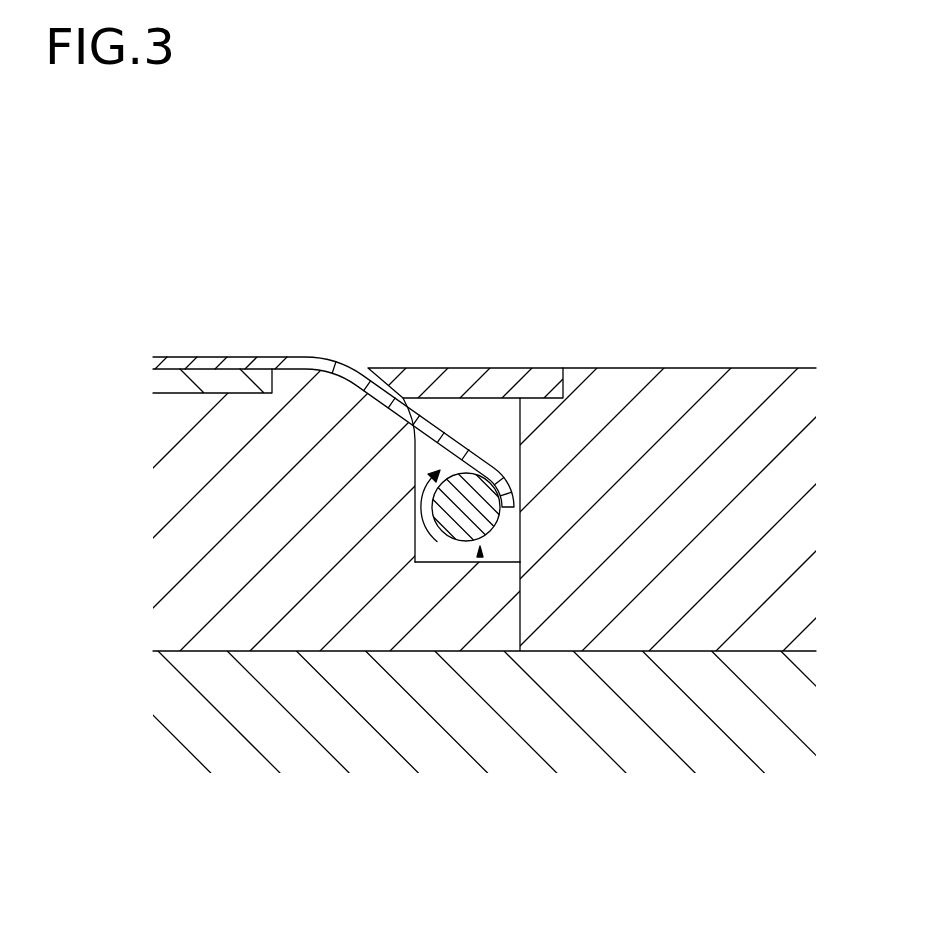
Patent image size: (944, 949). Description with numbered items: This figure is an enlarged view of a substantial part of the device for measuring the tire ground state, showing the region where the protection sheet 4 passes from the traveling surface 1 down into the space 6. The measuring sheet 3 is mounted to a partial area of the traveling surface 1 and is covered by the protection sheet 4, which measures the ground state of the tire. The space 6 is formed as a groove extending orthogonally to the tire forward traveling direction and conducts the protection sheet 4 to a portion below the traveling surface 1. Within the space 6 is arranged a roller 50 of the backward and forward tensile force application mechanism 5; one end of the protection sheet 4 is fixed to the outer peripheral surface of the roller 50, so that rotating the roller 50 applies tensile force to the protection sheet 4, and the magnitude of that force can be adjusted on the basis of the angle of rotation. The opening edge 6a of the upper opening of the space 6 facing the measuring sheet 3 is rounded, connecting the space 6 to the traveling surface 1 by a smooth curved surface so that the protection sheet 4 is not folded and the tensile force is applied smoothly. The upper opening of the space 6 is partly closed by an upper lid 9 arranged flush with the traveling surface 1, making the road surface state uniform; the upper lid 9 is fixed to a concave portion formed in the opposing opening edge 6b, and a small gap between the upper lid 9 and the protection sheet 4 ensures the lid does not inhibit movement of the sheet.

The traveling surface 1 is at (755, 368).
The measuring sheet 3 is at (226, 381).
The protection sheet 4 is at (310, 364).
The backward and forward tensile force application mechanism 5 is at (480, 552).
The space 6 is at (489, 438).
The opening edge 6a is at (403, 397).
The opening edge 6b is at (519, 404).
The upper lid 9 is at (483, 368).
The roller 50 is at (466, 510).